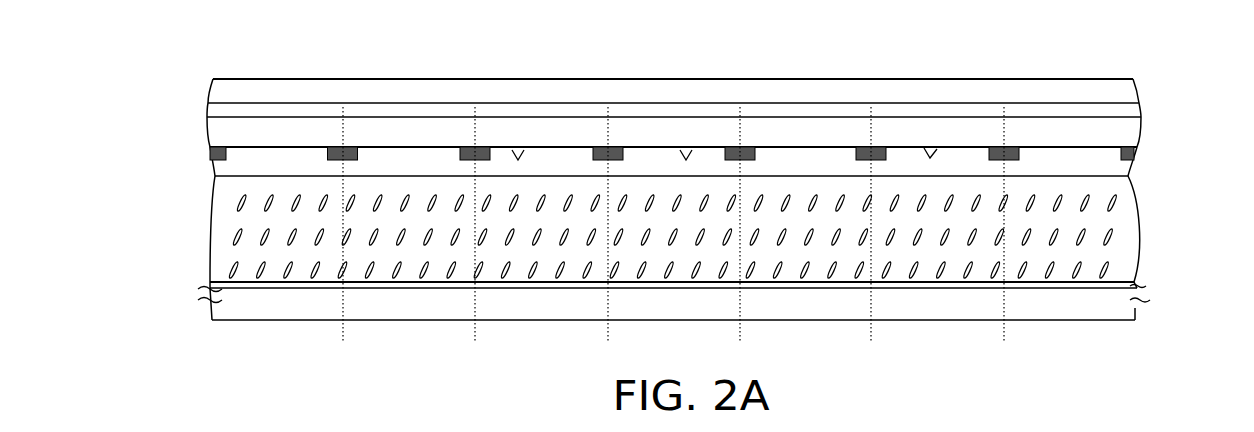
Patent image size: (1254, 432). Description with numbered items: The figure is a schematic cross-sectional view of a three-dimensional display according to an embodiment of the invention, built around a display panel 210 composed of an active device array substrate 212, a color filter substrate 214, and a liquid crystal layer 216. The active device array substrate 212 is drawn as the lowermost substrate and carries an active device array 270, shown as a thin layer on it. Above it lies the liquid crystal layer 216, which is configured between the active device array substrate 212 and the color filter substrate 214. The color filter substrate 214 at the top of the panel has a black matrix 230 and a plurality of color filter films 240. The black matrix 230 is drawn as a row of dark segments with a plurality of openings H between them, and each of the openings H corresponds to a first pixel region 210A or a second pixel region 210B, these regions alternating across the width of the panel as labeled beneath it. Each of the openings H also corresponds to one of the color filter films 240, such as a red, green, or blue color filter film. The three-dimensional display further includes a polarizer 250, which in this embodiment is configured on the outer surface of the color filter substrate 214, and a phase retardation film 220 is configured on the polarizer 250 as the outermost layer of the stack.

The display panel 210 is at (123, 138).
The active device array substrate 212 is at (190, 288).
The color filter substrate 214 is at (190, 117).
The liquid crystal layer 216 is at (190, 176).
The phase retardation film 220 is at (1134, 83).
The black matrix 230 is at (593, 148).
The color filter films 240 is at (653, 160).
The polarizer 250 is at (1134, 112).
The active device array 270 is at (1140, 285).
The openings H is at (518, 160).
The first pixel region 210A is at (677, 235).
The second pixel region 210B is at (657, 349).